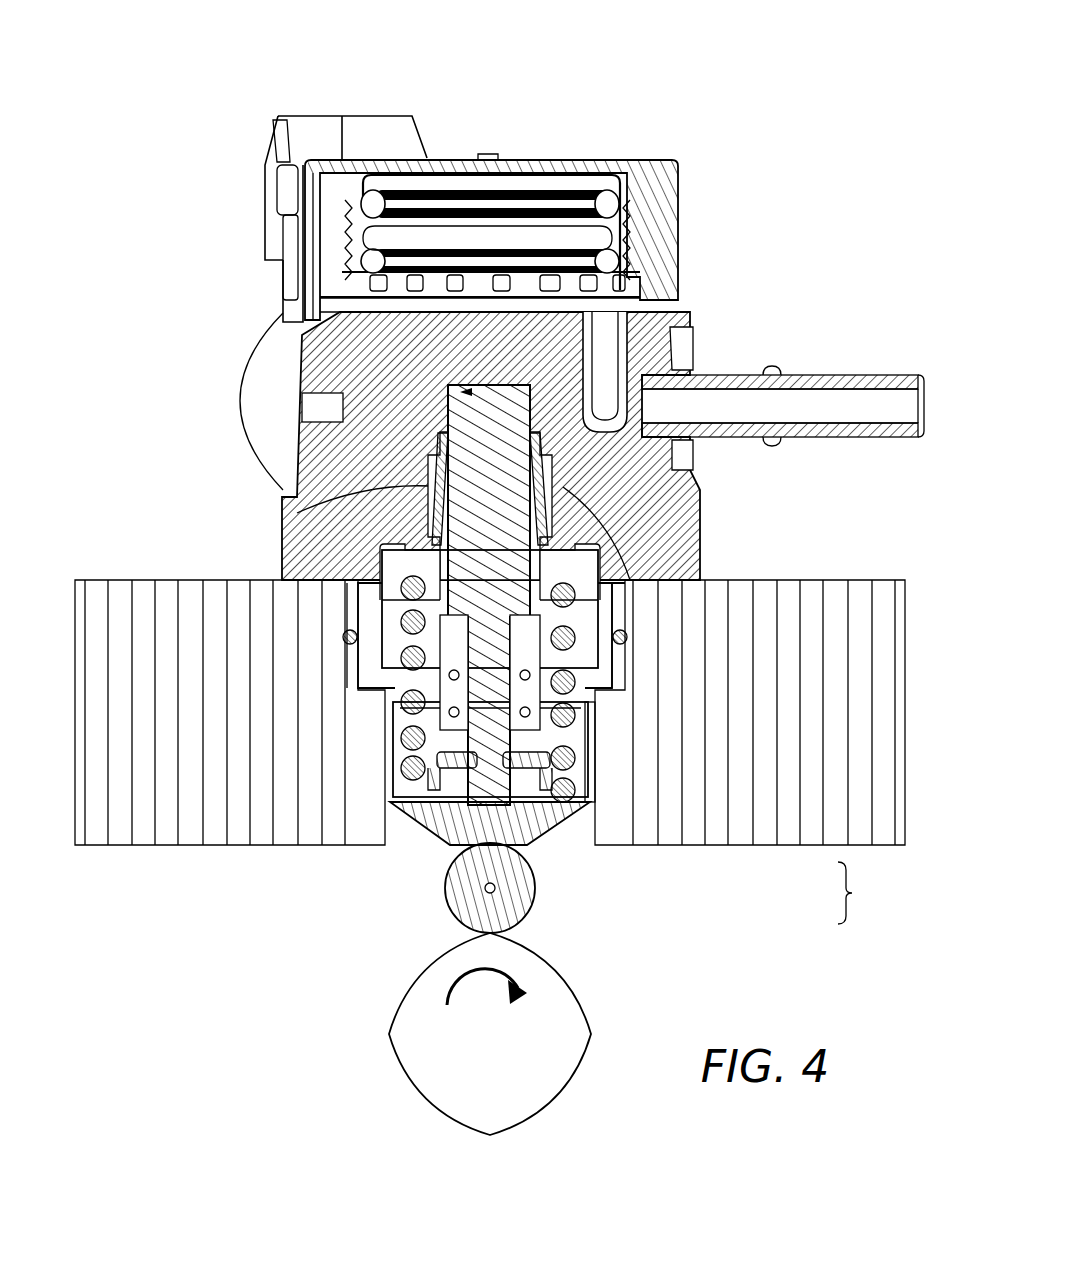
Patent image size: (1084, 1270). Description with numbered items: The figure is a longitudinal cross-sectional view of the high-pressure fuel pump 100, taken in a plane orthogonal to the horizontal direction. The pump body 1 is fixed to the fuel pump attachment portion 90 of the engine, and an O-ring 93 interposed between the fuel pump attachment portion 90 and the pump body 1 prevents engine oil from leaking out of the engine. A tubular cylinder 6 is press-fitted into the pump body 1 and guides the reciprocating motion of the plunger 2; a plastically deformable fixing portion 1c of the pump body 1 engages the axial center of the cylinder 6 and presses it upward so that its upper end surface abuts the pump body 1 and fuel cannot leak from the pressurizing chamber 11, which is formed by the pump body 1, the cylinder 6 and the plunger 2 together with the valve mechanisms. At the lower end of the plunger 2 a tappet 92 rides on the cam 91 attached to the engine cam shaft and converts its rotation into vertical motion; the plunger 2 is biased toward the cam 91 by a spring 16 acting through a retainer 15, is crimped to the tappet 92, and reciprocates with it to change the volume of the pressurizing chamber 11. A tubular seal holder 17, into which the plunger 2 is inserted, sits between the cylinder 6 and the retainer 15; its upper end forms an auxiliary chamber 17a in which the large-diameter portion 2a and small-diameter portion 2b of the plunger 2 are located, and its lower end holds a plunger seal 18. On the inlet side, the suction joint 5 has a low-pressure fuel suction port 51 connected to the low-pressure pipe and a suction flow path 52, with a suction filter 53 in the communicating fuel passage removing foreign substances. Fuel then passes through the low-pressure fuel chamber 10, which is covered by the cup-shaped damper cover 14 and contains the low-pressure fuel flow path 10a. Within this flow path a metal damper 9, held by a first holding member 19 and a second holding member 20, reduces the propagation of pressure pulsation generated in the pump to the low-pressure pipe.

The high-pressure fuel pump 100 is at (782, 60).
The pump body 1 is at (330, 372).
The fixing portion 1c is at (432, 553).
The plunger 2 is at (854, 893).
The large-diameter portion 2a is at (632, 590).
The small-diameter portion 2b is at (590, 700).
The suction joint 5 is at (825, 375).
The low-pressure fuel suction port 51 is at (888, 402).
The suction flow path 52 is at (755, 412).
The suction filter 53 is at (690, 336).
The cylinder 6 is at (405, 497).
The metal damper 9 is at (550, 205).
The low-pressure fuel chamber 10 is at (512, 188).
The low-pressure fuel flow path 10a is at (568, 300).
The pressurizing chamber 11 is at (500, 385).
The damper cover 14 is at (660, 165).
The retainer 15 is at (550, 848).
The spring 16 is at (398, 600).
The seal holder 17 is at (388, 700).
The auxiliary chamber 17a is at (415, 830).
The plunger seal 18 is at (600, 830).
The first holding member 19 is at (300, 240).
The second holding member 20 is at (300, 290).
The fuel pump attachment portion 90 is at (97, 822).
The cam 91 is at (565, 1025).
The tappet 92 is at (447, 858).
The O-ring 93 is at (353, 645).